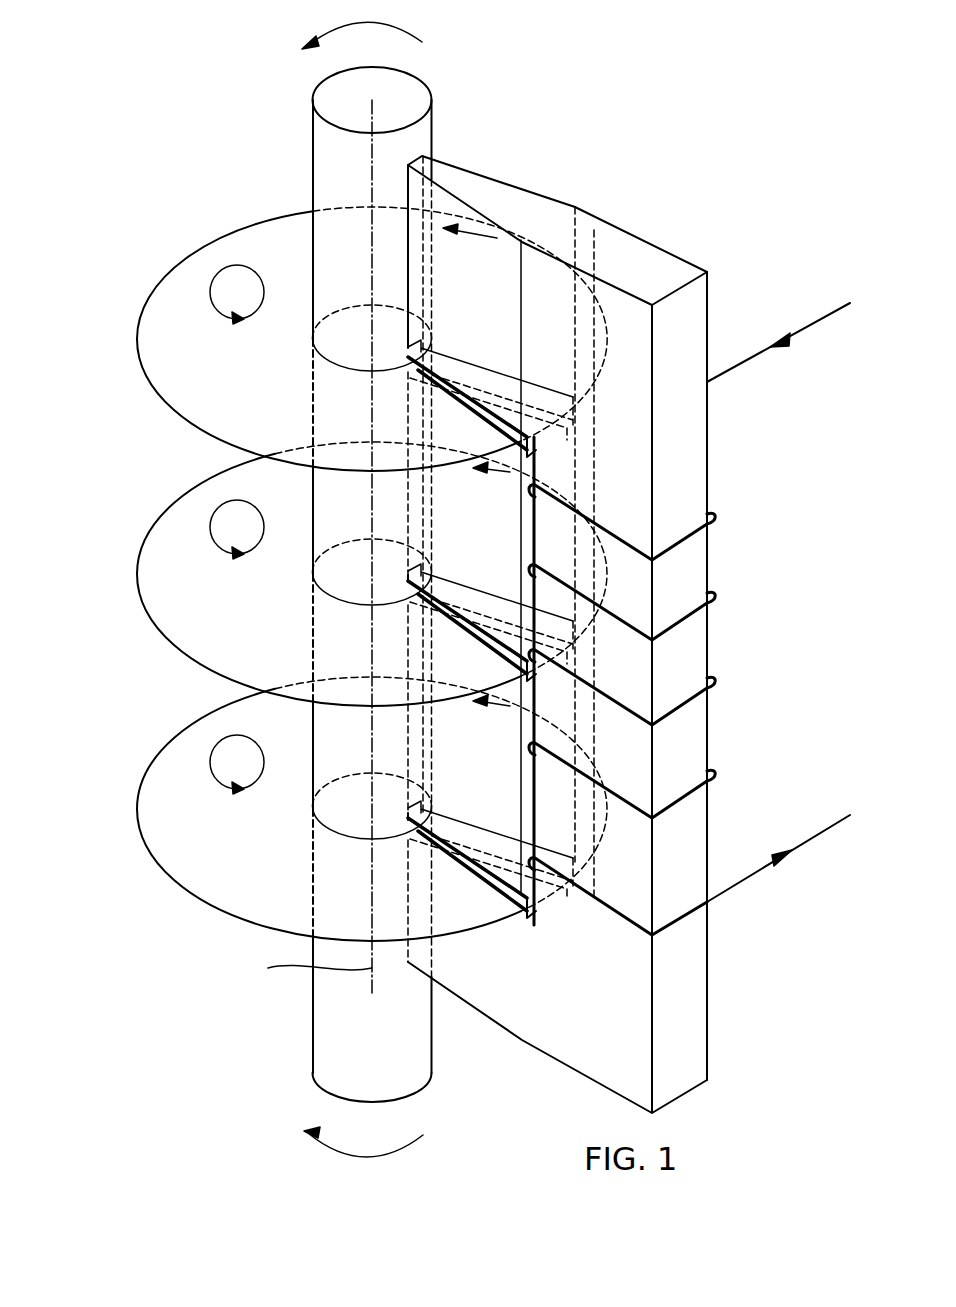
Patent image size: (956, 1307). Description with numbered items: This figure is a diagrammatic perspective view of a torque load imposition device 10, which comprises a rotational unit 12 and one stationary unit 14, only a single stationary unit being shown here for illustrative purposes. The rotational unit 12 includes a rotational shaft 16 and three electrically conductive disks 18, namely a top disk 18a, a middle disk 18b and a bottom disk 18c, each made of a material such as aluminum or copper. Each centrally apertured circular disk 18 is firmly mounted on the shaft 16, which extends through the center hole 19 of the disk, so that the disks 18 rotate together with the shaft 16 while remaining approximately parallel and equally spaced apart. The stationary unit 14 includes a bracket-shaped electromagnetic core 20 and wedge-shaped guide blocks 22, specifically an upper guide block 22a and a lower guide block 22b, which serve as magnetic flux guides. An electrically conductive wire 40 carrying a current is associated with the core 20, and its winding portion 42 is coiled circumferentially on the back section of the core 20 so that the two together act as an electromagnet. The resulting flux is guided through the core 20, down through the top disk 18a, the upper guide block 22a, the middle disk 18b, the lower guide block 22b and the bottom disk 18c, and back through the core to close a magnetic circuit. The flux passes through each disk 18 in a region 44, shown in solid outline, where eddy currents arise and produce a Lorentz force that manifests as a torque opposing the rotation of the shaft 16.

The torque load imposition device 10 is at (222, 197).
The rotational unit 12 is at (175, 904).
The stationary unit 14 is at (738, 967).
The rotational shaft 16 is at (340, 1006).
The electrically conductive disk 18 is at (322, 574).
The top disk 18a is at (172, 328).
The middle disk 18b is at (172, 577).
The bottom disk 18c is at (172, 811).
The center hole 19 is at (347, 343).
The electromagnetic core 20 is at (675, 460).
The guide block 22 is at (407, 629).
The upper guide block 22a is at (452, 483).
The lower guide block 22b is at (452, 712).
The electrically conductive wire 40 is at (762, 355).
The winding portion 42 is at (713, 603).
The region 44 is at (487, 380).